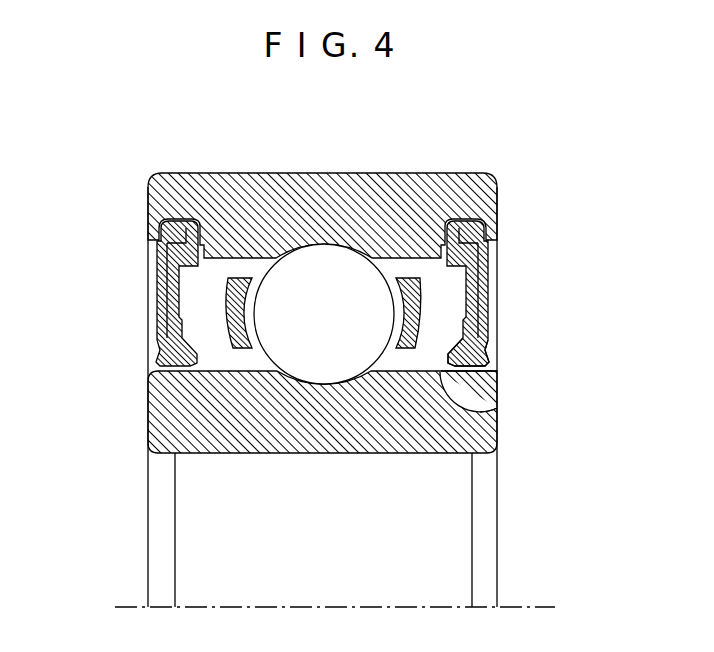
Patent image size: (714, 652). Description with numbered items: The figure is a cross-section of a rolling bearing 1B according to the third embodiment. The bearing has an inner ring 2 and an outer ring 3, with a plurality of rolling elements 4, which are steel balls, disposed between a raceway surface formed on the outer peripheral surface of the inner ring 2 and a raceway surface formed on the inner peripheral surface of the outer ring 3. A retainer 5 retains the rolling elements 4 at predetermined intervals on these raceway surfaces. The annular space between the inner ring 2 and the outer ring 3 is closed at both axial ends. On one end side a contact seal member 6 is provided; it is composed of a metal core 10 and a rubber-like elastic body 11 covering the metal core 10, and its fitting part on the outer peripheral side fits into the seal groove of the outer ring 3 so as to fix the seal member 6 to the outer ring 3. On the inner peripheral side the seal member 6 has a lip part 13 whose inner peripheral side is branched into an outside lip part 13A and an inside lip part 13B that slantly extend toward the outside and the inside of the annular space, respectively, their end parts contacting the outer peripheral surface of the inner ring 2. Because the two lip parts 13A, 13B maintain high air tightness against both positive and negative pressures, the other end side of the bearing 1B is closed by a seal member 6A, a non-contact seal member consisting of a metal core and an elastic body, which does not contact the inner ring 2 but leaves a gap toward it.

The bearing 1B is at (517, 162).
The inner ring 2 is at (222, 428).
The outer ring 3 is at (390, 210).
The rolling elements 4 is at (327, 282).
The retainer 5 is at (240, 280).
The seal member 6 is at (487, 297).
The seal member 6A is at (155, 295).
The metal core 10 is at (483, 265).
The elastic body 11 is at (483, 317).
The lip part 13 is at (512, 493).
The outside lip part 13A is at (484, 374).
The inside lip part 13B is at (497, 413).